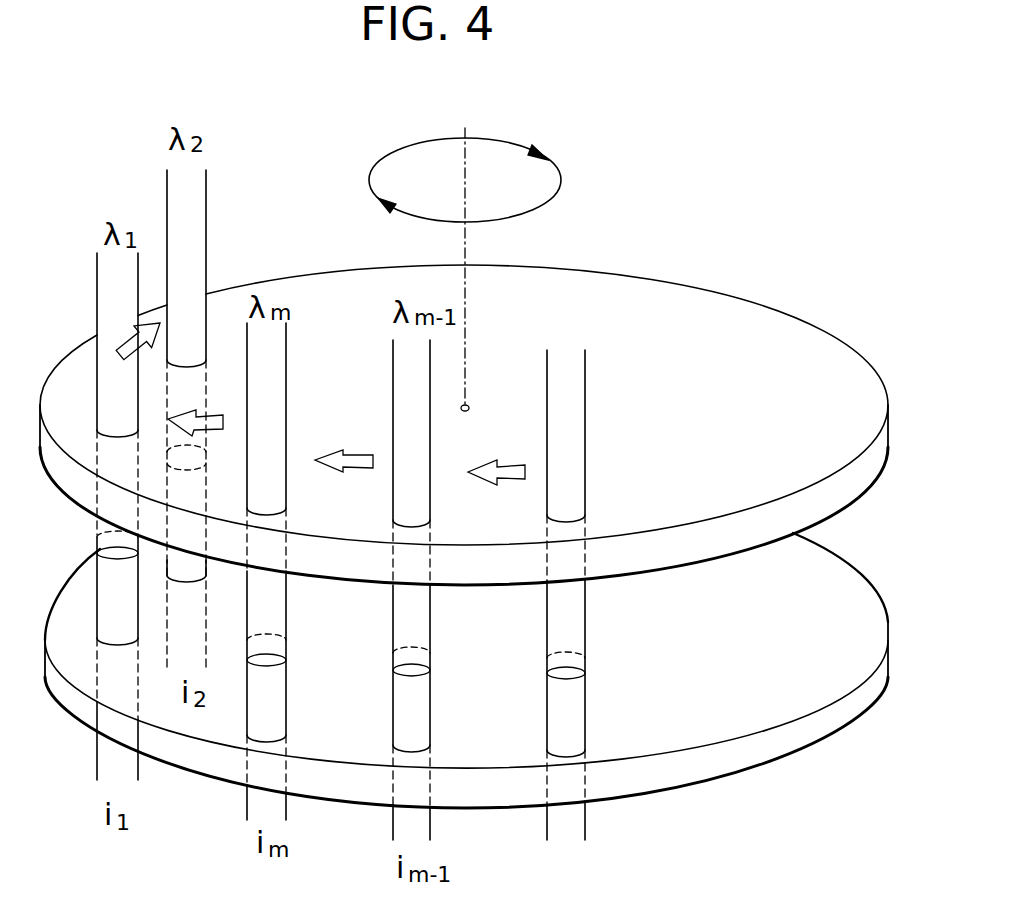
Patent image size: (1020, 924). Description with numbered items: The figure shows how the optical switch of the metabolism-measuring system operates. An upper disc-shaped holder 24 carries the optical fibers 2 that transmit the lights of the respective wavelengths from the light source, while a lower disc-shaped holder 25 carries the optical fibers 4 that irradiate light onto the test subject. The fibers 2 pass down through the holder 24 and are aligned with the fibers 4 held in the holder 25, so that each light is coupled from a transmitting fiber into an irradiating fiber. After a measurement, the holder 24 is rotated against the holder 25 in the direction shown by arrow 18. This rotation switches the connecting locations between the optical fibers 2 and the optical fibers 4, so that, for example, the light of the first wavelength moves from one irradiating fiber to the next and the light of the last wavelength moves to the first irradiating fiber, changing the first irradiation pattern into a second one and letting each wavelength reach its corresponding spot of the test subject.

The optical fibers for transmitting light from the light source 2 is at (586, 423).
The optical fibers for irradiating light 4 is at (586, 705).
The arrow 18 is at (518, 150).
The holder of the optical fibers for transmitting light from the light source 24 is at (749, 315).
The holder of the optical fibers for irradiating light 25 is at (772, 705).